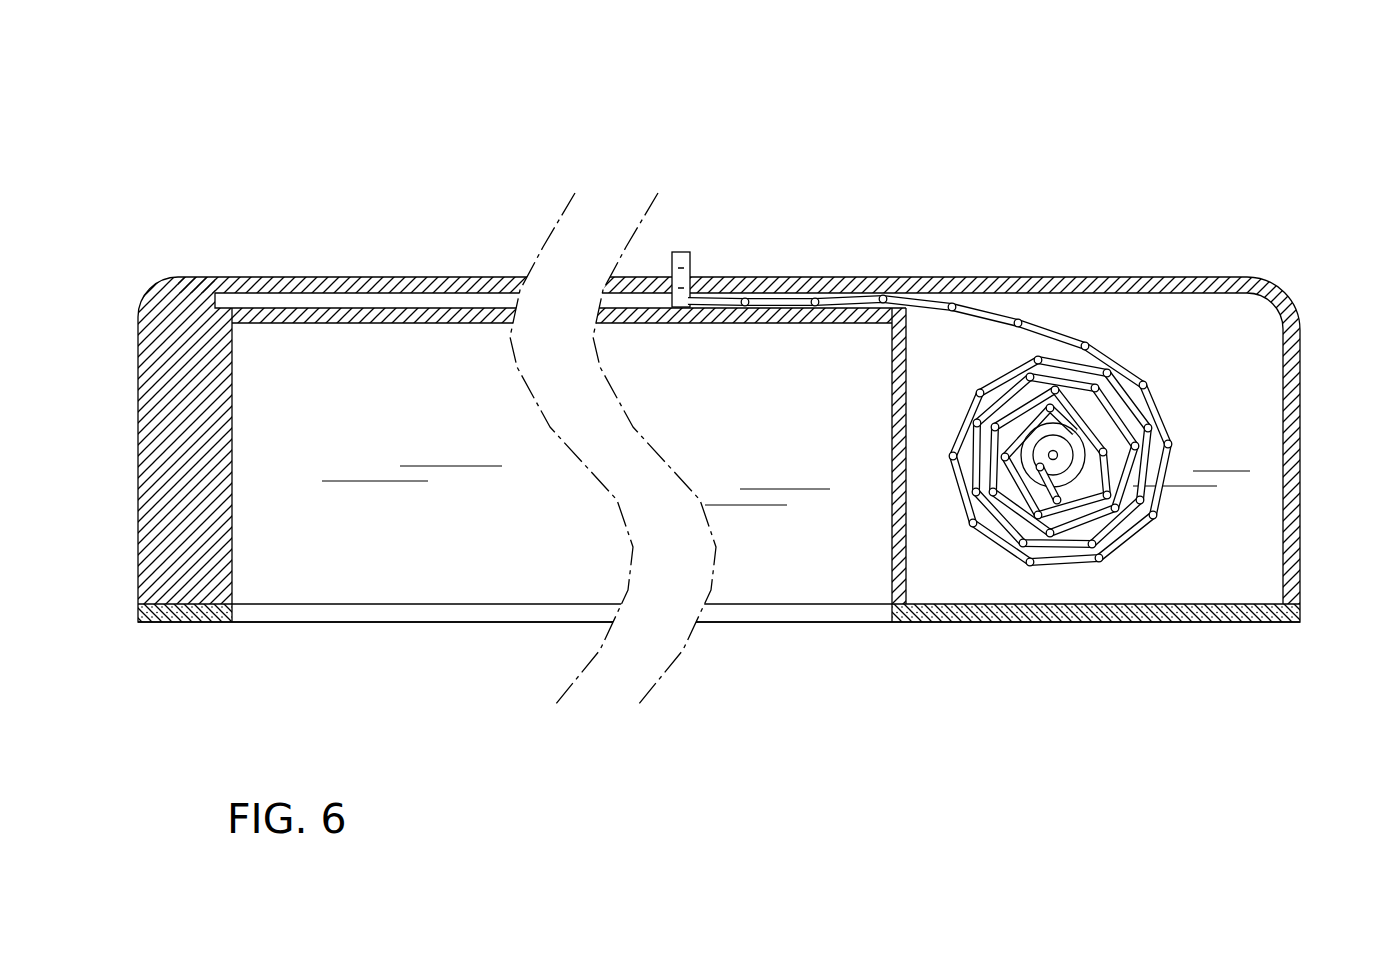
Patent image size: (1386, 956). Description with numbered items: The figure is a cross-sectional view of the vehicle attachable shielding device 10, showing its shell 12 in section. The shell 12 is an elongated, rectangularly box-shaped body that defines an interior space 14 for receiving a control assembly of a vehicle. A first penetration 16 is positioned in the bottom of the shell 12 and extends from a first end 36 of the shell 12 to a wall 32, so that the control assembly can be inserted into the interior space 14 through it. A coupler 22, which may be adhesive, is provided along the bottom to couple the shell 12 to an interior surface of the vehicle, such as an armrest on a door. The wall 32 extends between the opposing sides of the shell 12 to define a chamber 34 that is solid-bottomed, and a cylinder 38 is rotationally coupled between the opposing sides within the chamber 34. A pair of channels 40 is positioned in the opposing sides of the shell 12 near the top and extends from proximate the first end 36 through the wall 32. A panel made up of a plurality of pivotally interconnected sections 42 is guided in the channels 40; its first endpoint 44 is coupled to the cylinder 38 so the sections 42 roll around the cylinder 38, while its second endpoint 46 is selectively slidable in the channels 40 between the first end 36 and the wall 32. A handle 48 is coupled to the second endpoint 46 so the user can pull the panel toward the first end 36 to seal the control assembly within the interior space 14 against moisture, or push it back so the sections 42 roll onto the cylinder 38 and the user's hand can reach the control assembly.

The vehicle attachable shielding device 10 is at (988, 105).
The shell 12 is at (207, 277).
The interior space 14 is at (400, 540).
The first penetration 16 is at (438, 625).
The coupler 22 is at (173, 625).
The wall 32 is at (897, 502).
The chamber 34 is at (1230, 533).
The first end 36 is at (132, 368).
The cylinder 38 is at (1060, 468).
The channels 40 is at (393, 296).
The sections 42 is at (1135, 477).
The first endpoint 44 is at (1037, 447).
The second endpoint 46 is at (698, 297).
The handle 48 is at (686, 250).